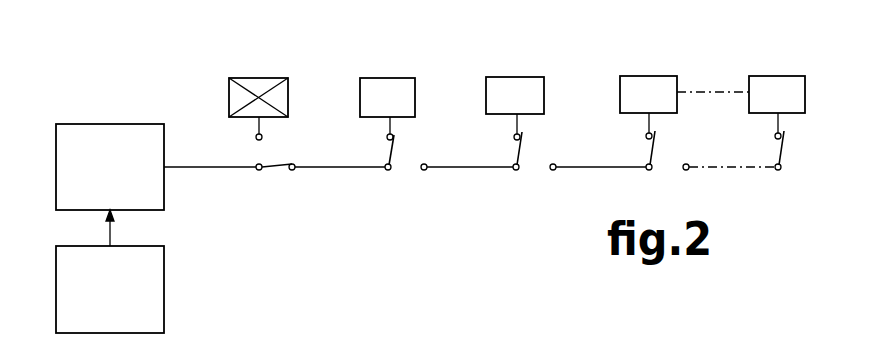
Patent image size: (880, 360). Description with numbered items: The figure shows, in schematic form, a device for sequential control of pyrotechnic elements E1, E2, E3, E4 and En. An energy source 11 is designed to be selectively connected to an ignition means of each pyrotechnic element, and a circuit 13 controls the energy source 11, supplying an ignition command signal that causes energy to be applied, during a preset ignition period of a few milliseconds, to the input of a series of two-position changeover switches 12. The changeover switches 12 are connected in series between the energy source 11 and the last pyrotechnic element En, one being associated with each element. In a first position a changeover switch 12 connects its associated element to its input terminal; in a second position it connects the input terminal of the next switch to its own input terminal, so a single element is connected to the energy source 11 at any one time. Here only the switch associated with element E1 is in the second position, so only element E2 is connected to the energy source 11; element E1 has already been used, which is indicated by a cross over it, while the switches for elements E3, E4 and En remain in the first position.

The energy source 11 is at (97, 177).
The circuit 13 is at (97, 301).
The two-position changeover switches 12 is at (280, 170).
The pyrotechnic element E1 is at (262, 86).
The pyrotechnic element E2 is at (397, 88).
The pyrotechnic element E3 is at (520, 91).
The pyrotechnic element E4 is at (652, 91).
The last pyrotechnic element En is at (776, 86).